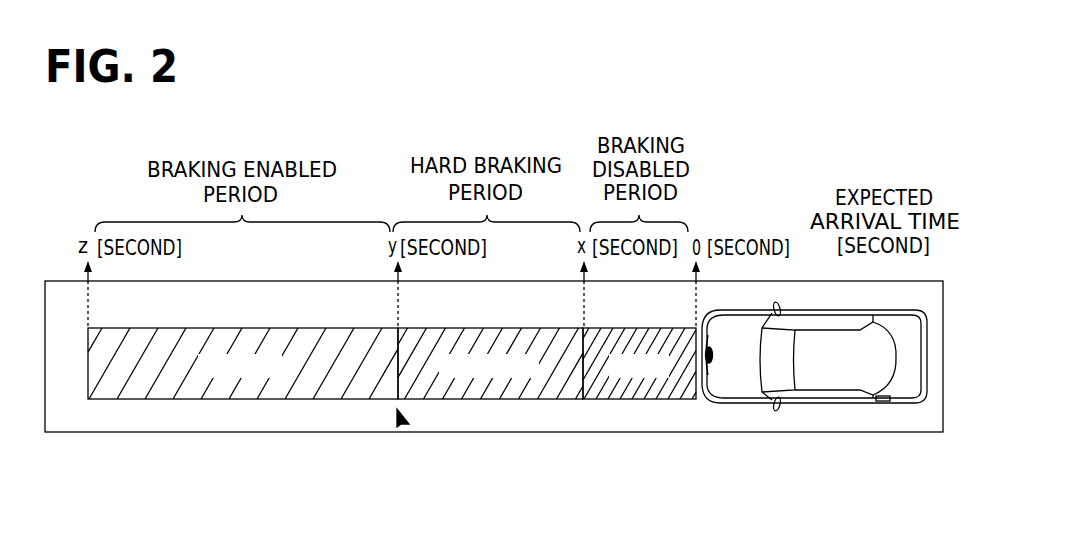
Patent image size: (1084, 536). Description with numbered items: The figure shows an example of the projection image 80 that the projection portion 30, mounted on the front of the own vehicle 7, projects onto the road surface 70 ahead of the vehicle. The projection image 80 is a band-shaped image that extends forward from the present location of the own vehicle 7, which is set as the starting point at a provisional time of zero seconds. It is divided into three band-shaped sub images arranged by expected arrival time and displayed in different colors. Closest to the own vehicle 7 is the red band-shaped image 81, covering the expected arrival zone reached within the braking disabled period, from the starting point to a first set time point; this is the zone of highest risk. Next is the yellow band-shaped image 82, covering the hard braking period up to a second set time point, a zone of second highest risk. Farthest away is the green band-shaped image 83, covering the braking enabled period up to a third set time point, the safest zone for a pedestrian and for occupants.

The road surface 70 is at (57, 432).
The green band-shaped image 83 is at (243, 399).
The yellow band-shaped image 82 is at (495, 399).
The red band-shaped image 81 is at (635, 399).
The projection image 80 is at (401, 428).
The projection portion 30 is at (716, 403).
The own vehicle 7 is at (814, 407).